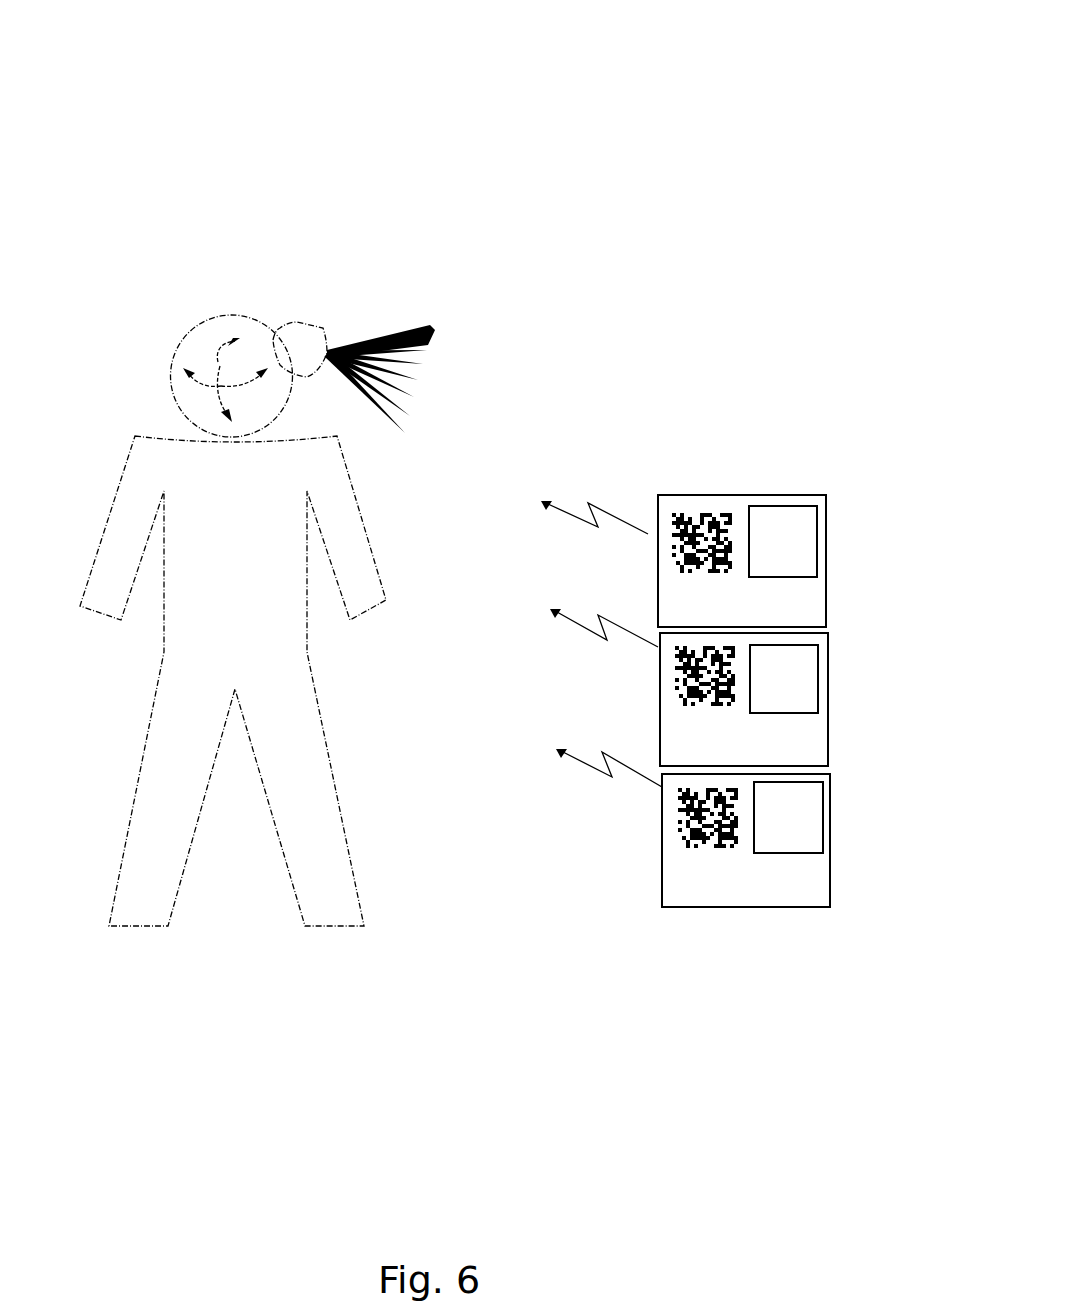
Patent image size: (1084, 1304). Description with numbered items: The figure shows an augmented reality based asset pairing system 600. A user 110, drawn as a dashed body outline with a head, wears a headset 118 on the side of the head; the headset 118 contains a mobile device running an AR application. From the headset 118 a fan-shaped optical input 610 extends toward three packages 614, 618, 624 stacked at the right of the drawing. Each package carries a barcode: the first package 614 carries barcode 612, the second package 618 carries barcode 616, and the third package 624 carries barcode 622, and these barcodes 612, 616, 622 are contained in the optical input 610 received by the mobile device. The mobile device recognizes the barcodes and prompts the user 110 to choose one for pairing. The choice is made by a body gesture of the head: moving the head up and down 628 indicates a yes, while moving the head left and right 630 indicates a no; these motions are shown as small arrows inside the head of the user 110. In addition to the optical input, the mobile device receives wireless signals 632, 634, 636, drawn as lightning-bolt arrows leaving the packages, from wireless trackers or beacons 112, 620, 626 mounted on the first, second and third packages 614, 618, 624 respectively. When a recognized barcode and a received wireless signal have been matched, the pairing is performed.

The AR based asset pairing system 600 is at (186, 86).
The user 110 is at (230, 316).
The headset 118 is at (300, 323).
The optical input 610 is at (437, 330).
The up and down head movement 628 is at (218, 362).
The left and right head movement 630 is at (221, 386).
The barcode 612 is at (693, 513).
The package 614 is at (737, 492).
The wireless tracker or beacon 112 is at (785, 508).
The barcode 616 is at (710, 647).
The wireless tracker or beacon 620 is at (828, 677).
The package 618 is at (830, 735).
The wireless tracker or beacon 626 is at (825, 815).
The package 624 is at (832, 888).
The barcode 622 is at (703, 848).
The wireless signal 632 is at (594, 500).
The wireless signal 634 is at (604, 614).
The wireless signal 636 is at (609, 750).